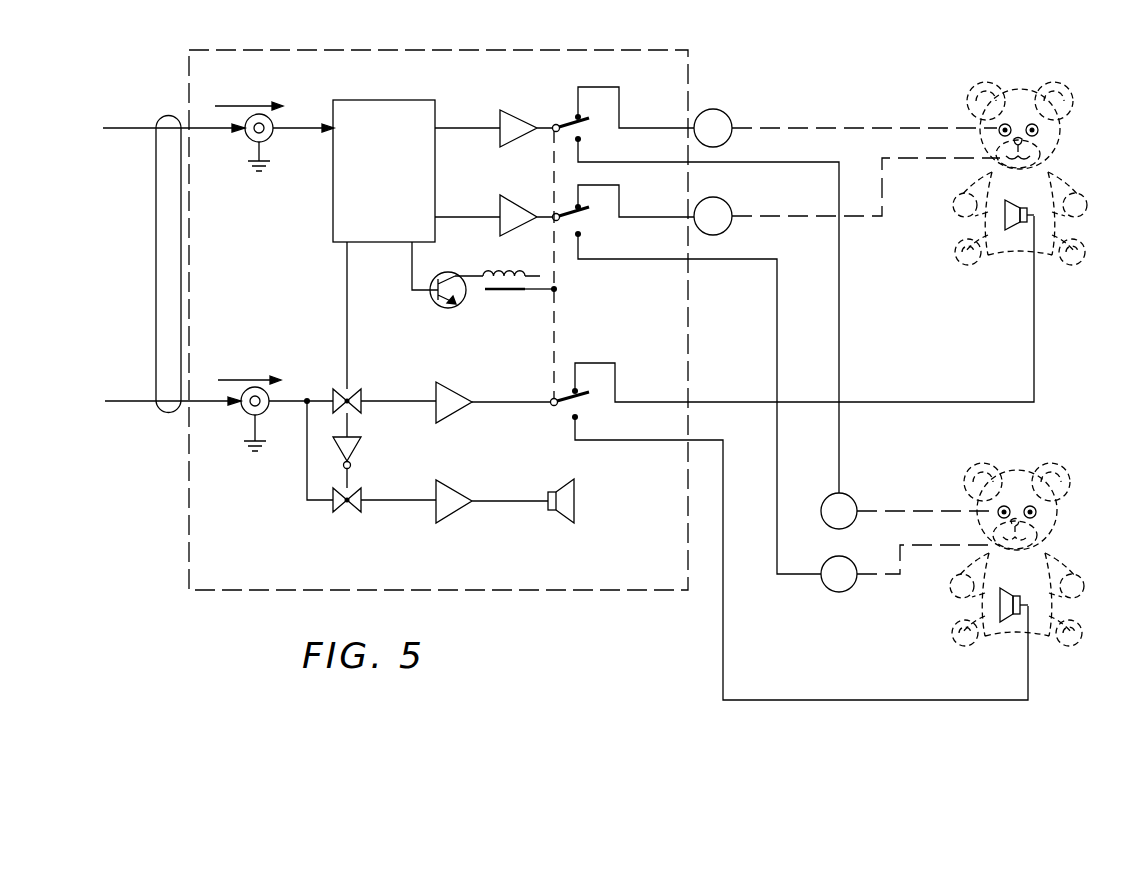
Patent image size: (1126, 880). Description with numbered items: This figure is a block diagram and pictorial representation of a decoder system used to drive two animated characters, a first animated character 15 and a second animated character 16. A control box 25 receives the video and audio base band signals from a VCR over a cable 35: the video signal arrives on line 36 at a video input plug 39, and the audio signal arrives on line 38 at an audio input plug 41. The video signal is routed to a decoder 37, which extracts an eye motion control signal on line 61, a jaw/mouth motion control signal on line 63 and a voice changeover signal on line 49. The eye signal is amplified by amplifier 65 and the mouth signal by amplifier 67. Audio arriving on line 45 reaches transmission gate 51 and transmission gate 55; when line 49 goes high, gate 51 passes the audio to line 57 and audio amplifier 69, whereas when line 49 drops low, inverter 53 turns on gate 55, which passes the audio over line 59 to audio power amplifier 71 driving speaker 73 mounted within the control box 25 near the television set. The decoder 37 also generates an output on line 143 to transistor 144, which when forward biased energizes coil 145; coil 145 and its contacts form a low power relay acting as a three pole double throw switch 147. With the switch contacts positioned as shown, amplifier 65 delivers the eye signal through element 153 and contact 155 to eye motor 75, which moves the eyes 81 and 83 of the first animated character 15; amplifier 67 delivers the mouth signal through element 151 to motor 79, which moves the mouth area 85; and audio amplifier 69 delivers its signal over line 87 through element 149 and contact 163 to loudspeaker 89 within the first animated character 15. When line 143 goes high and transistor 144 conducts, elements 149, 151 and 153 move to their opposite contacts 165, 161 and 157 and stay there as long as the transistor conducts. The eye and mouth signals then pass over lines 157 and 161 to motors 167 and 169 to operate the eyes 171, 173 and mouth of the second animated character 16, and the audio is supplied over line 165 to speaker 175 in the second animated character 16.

The animated figure 15 is at (1020, 94).
The second animated figure 16 is at (1042, 480).
The control box 25 is at (438, 305).
The cable 35 is at (155, 241).
The line 36 is at (155, 128).
The decoder 37 is at (398, 100).
The line 38 is at (140, 401).
The video input plug 39 is at (270, 138).
The audio input plug 41 is at (244, 412).
The line 45 is at (312, 398).
The line 49 is at (346, 298).
The transmission gate 51 is at (355, 390).
The inverter 53 is at (360, 448).
The transmission gate 55 is at (338, 512).
The line 57 is at (422, 402).
The line 59 is at (396, 502).
The line 61 is at (480, 130).
The line 63 is at (458, 216).
The amplifier 65 is at (504, 110).
The amplifier 67 is at (504, 196).
The audio amplifier 69 is at (452, 384).
The audio power amplifier 71 is at (460, 518).
The speaker 73 is at (576, 507).
The eye motor 75 is at (756, 90).
The motor 79 is at (720, 198).
The eye 81 is at (1000, 126).
The eye 83 is at (1042, 130).
The mouth area 85 is at (1030, 156).
The line 87 is at (494, 404).
The loudspeaker 89 is at (1012, 232).
The line 143 is at (412, 264).
The transistor 144 is at (436, 304).
The coil 145 is at (505, 295).
The three pole double throw switch 147 is at (554, 345).
The element 149 is at (586, 400).
The element 151 is at (587, 211).
The element 153 is at (586, 120).
The contact 155 is at (586, 88).
The contact 157 is at (600, 185).
The contact 161 is at (680, 259).
The contact 163 is at (601, 362).
The contact 165 is at (944, 700).
The motor 167 is at (856, 499).
The motor 169 is at (836, 592).
The eye of second toy figure 171 is at (1008, 504).
The eye of second toy figure 173 is at (1036, 516).
The speaker 175 is at (1002, 605).